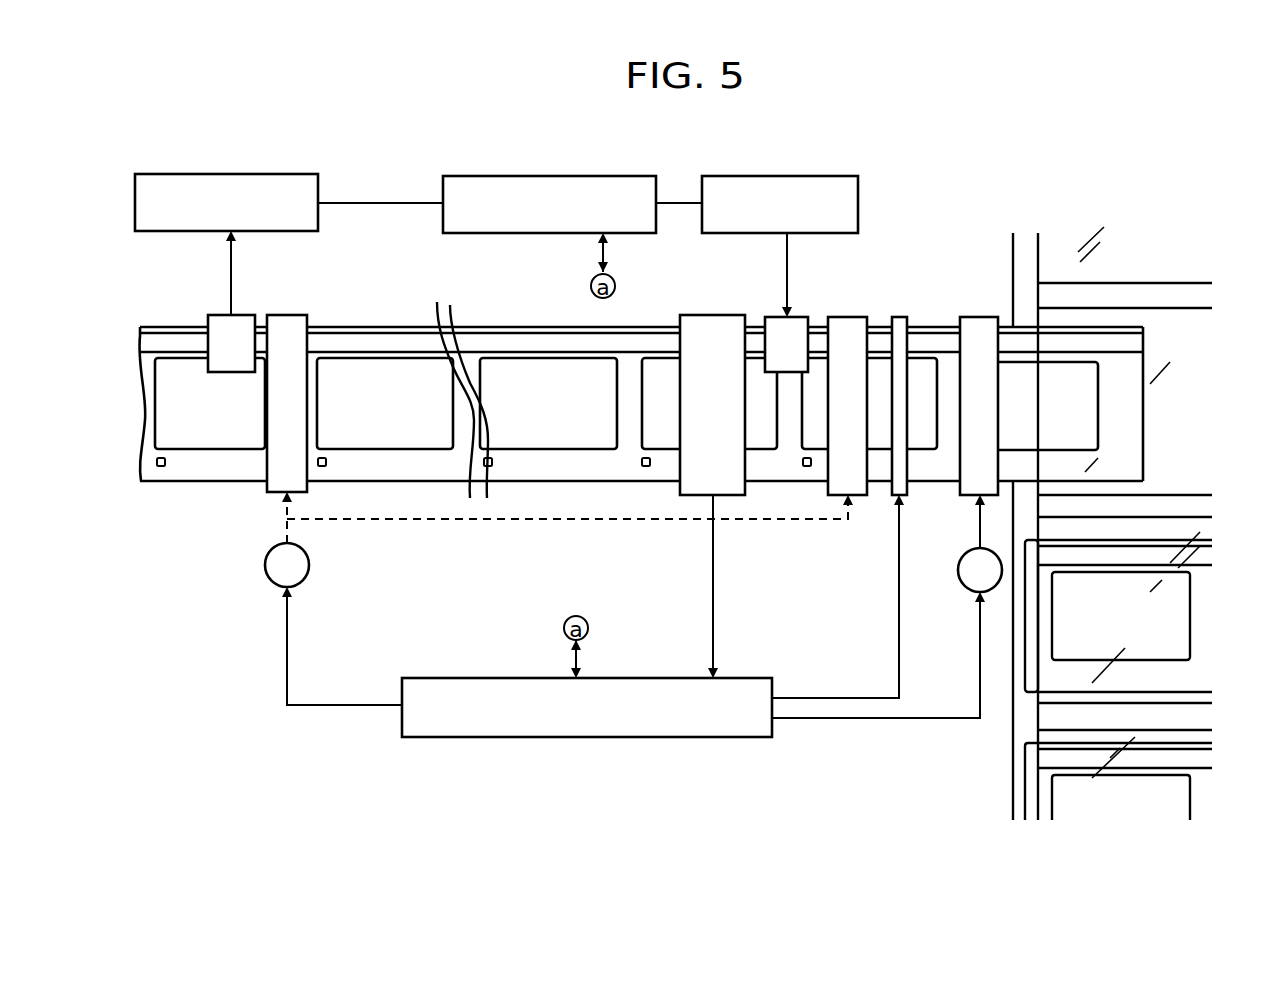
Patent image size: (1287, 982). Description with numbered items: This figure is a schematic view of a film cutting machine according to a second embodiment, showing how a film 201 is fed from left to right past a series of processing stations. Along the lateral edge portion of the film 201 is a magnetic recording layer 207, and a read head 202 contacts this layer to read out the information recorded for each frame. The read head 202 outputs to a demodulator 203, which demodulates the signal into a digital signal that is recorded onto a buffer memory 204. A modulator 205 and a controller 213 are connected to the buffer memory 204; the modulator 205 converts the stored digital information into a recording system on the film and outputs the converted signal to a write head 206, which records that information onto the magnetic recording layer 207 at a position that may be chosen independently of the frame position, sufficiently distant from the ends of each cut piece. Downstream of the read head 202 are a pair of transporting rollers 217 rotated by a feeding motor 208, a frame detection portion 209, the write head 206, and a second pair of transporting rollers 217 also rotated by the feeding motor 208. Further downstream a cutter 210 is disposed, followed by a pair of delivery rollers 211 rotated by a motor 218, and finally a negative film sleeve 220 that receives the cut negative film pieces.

The film 201 is at (132, 368).
The read head 202 is at (240, 314).
The demodulator 203 is at (306, 174).
The buffer memory 204 is at (630, 176).
The modulator 205 is at (792, 176).
The write head 206 is at (797, 318).
The magnetic recording layer 207 is at (426, 322).
The feeding motor 208 is at (265, 564).
The frame detection portion 209 is at (714, 314).
The cutter 210 is at (899, 316).
The delivery rollers 211 is at (984, 316).
The controller 213 is at (756, 678).
The transporting rollers 217 is at (310, 493).
The motor 218 is at (962, 588).
The negative film sleeve 220 is at (1012, 726).